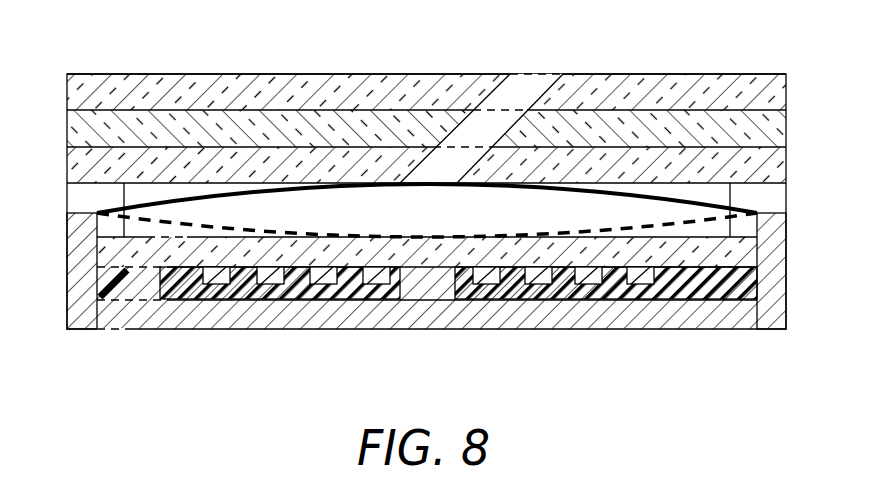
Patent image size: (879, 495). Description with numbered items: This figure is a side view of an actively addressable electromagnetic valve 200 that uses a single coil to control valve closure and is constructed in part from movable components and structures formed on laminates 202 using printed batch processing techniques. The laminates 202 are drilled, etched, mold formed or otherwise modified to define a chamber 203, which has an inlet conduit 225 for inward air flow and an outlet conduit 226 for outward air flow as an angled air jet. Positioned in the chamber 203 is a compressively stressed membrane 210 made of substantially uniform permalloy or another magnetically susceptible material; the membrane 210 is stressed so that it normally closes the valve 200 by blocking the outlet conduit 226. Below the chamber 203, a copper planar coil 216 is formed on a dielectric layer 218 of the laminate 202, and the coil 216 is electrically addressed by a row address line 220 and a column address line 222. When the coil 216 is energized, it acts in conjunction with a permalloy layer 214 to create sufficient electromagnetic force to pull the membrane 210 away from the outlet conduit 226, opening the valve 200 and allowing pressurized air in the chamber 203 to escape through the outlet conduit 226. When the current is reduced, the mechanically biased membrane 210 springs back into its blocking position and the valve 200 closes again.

The electromagnetic valve 200 is at (700, 63).
The laminates 202 is at (113, 250).
The chamber 203 is at (713, 192).
The compressively stressed membrane 210 is at (670, 197).
The permalloy layer 214 is at (162, 322).
The copper planar coil 216 is at (205, 277).
The dielectric layer 218 is at (677, 282).
The row address line 220 is at (685, 226).
The column address line 222 is at (637, 288).
The inlet conduit 225 is at (130, 311).
The outlet conduit 226 is at (512, 100).